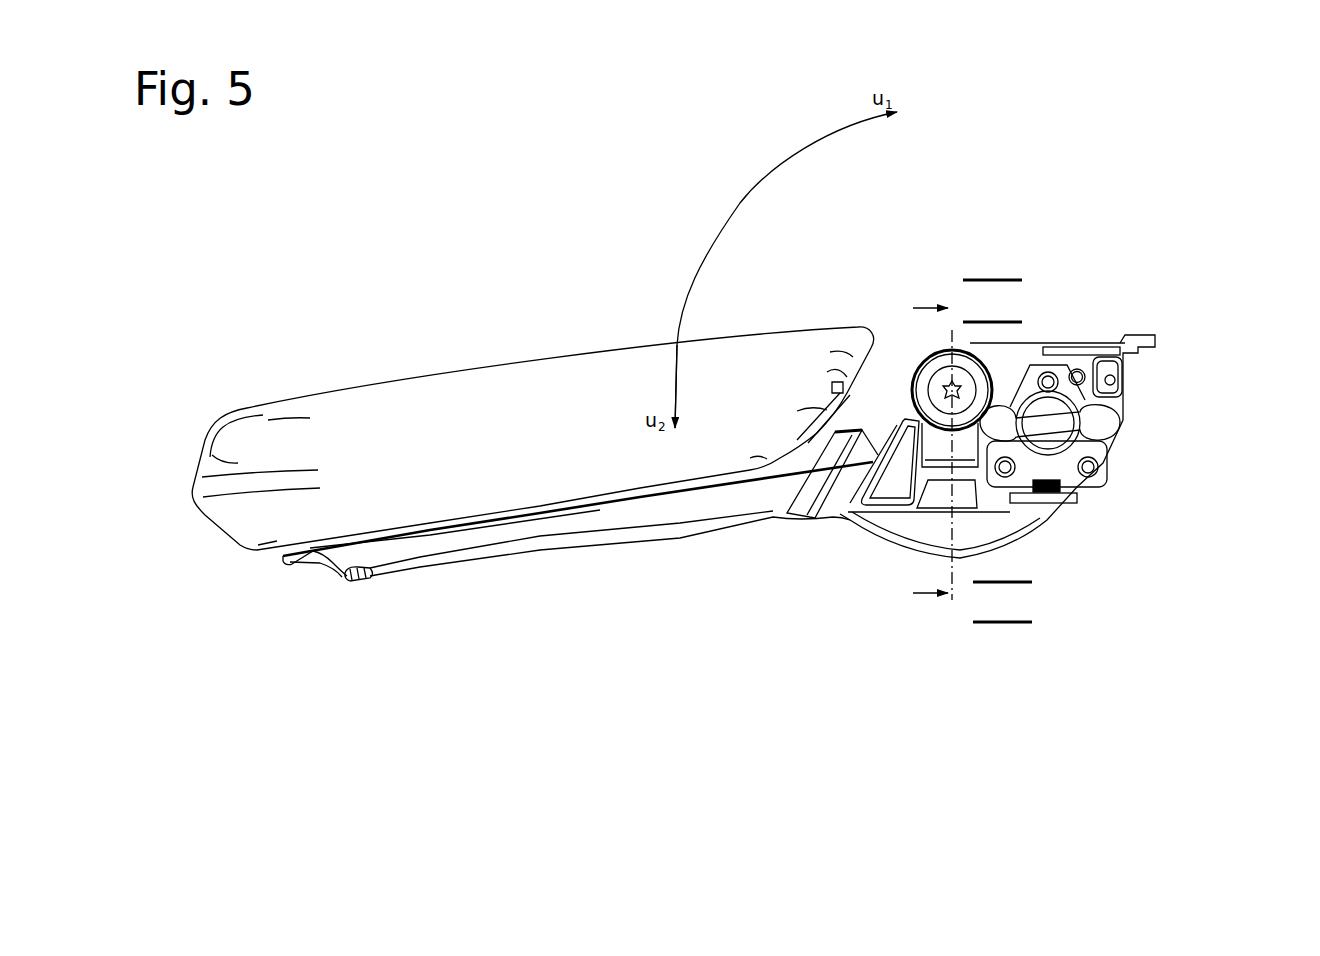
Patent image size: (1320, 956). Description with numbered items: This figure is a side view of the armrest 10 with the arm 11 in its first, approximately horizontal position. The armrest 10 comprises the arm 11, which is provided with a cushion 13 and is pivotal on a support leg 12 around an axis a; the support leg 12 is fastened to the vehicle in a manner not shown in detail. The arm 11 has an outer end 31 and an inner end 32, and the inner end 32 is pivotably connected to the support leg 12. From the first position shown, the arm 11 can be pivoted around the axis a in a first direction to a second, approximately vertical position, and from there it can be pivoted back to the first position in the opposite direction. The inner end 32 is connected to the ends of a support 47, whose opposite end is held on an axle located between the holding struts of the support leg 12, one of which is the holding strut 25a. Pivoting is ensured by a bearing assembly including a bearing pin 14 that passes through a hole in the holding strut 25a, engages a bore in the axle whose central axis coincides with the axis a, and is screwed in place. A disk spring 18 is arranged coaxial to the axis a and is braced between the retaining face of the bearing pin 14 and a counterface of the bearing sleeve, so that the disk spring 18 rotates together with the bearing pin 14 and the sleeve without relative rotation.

The armrest 10 is at (1116, 130).
The arm 11 is at (400, 402).
The support leg 12 is at (1120, 433).
The cushion 13 is at (565, 382).
The bearing pin 14 is at (937, 366).
The disk spring 18 is at (910, 416).
The holding strut 25a is at (942, 416).
The outer end 31 is at (203, 442).
The inner end 32 is at (878, 328).
The support 47 is at (1000, 523).
The axis a is at (955, 386).